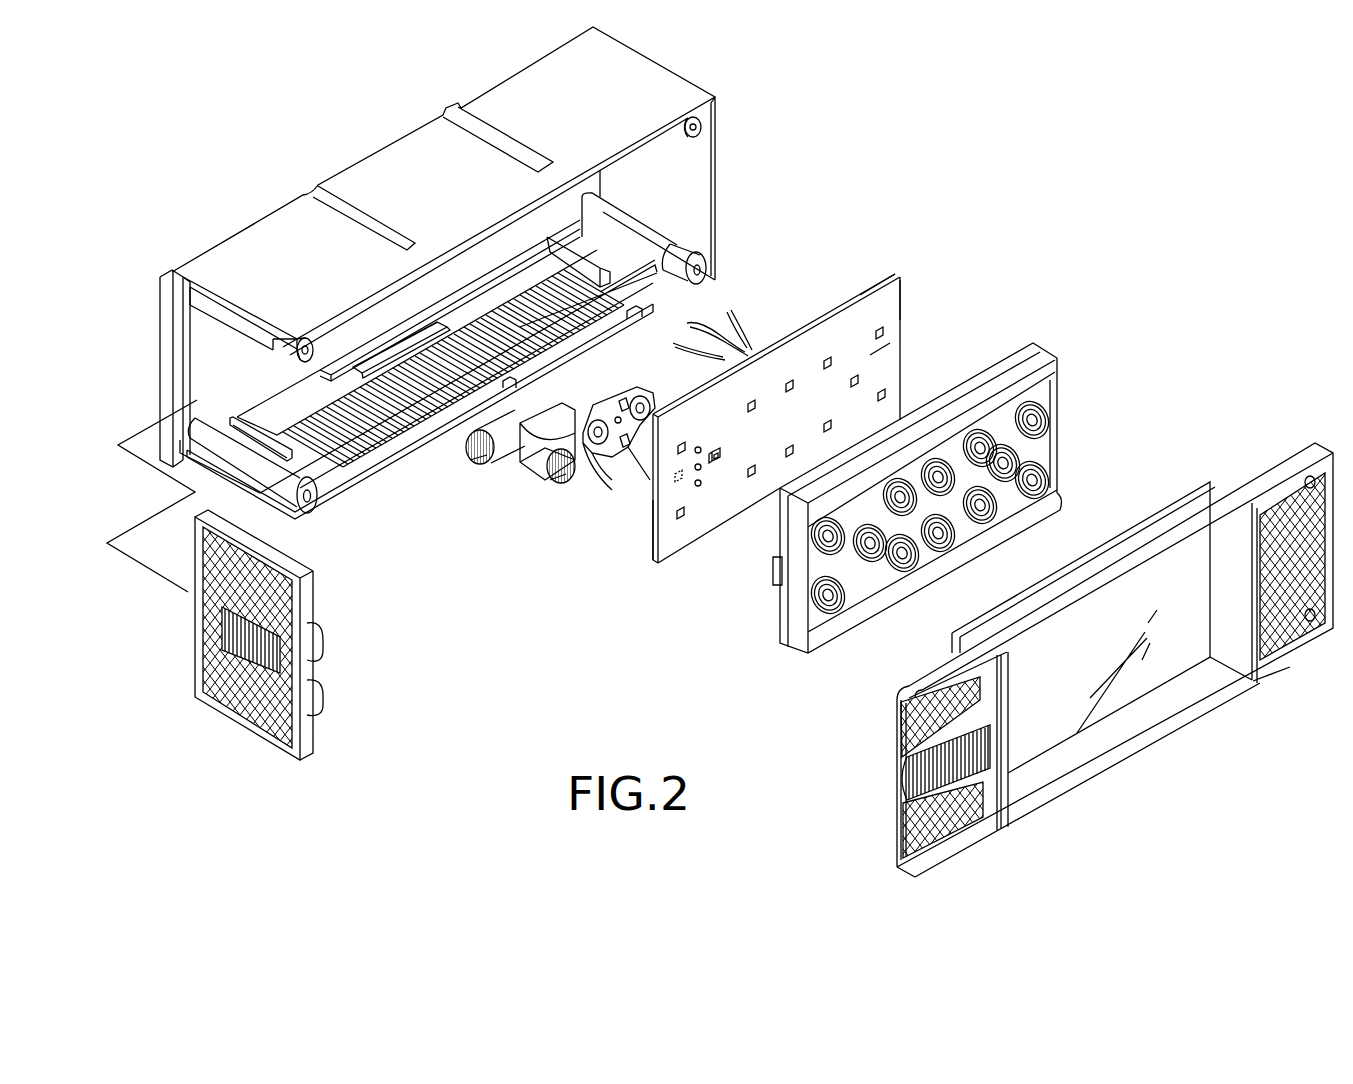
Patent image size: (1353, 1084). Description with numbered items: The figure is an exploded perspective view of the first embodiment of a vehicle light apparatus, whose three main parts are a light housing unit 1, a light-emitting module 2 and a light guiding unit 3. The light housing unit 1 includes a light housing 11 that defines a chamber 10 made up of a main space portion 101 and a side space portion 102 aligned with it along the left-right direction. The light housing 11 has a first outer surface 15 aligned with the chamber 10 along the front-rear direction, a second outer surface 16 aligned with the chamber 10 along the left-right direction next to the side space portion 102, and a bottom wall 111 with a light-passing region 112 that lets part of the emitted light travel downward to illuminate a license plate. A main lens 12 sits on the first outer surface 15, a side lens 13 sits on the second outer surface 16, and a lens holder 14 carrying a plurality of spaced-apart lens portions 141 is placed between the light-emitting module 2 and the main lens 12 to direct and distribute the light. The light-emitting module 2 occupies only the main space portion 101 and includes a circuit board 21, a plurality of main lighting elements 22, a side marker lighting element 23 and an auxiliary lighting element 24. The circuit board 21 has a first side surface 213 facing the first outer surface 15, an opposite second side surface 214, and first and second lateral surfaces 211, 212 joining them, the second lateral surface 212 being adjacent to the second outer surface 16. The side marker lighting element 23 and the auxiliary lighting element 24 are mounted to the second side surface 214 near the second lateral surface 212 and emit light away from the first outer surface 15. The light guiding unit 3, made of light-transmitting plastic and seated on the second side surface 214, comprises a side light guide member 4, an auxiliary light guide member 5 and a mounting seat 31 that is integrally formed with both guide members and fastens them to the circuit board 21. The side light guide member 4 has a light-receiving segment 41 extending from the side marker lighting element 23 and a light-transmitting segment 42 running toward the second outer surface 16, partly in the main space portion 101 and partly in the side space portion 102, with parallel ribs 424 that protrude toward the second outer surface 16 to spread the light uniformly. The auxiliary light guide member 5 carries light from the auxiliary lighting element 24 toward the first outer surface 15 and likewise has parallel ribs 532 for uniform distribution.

The light housing unit 1 is at (790, 173).
The light-emitting module 2 is at (690, 553).
The light guiding unit 3 is at (523, 485).
The side light guide member 4 is at (465, 480).
The auxiliary light guide member 5 is at (572, 480).
The chamber 10 is at (357, 327).
The light housing 11 is at (723, 227).
The main lens 12 is at (1150, 710).
The side lens 13 is at (257, 707).
The lens holder 14 is at (1068, 421).
The first outer surface 15 is at (1257, 688).
The second outer surface 16 is at (208, 705).
The circuit board 21 is at (652, 565).
The main lighting elements 22 is at (878, 328).
The side marker lighting element 23 is at (708, 465).
The auxiliary lighting element 24 is at (677, 472).
The mounting seat 31 is at (612, 457).
The light-receiving segment 41 is at (622, 390).
The light-transmitting segment 42 is at (580, 377).
The main space portion 101 is at (458, 264).
The side space portion 102 is at (210, 344).
The bottom wall 111 is at (660, 288).
The light-passing region 112 is at (677, 245).
The lens portions 141 is at (1040, 472).
The first lateral surface 211 is at (902, 303).
The second lateral surface 212 is at (655, 523).
The first side surface 213 is at (880, 350).
The second side surface 214 is at (880, 278).
The parallel ribs 424 is at (486, 455).
The parallel ribs 532 is at (560, 460).